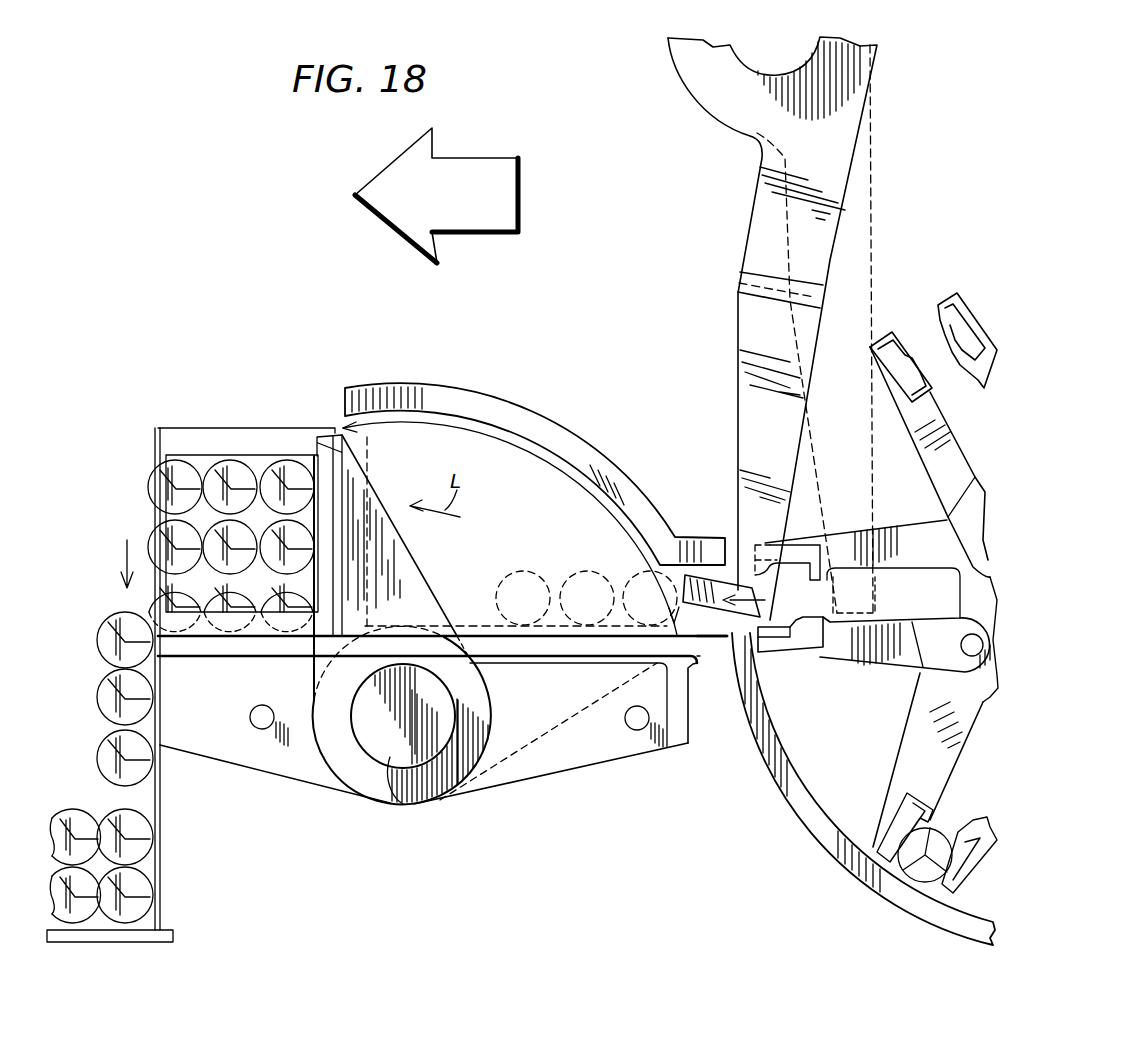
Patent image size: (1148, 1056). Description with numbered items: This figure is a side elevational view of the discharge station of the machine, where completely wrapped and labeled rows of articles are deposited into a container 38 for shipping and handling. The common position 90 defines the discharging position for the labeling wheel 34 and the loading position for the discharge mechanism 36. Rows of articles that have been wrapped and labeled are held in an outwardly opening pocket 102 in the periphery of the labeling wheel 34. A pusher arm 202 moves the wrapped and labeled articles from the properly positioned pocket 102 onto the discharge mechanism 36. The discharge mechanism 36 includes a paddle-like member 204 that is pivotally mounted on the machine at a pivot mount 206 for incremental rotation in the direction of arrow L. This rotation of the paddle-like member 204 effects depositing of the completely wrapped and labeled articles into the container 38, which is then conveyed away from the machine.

The labeling wheel 34 is at (780, 773).
The discharge mechanism 36 is at (592, 462).
The container 38 is at (160, 806).
The common position 90 is at (715, 680).
The outwardly opening pocket 102 is at (810, 648).
The pusher arm 202 is at (706, 582).
The paddle-like member 204 is at (413, 597).
The pivot mount 206 is at (398, 790).